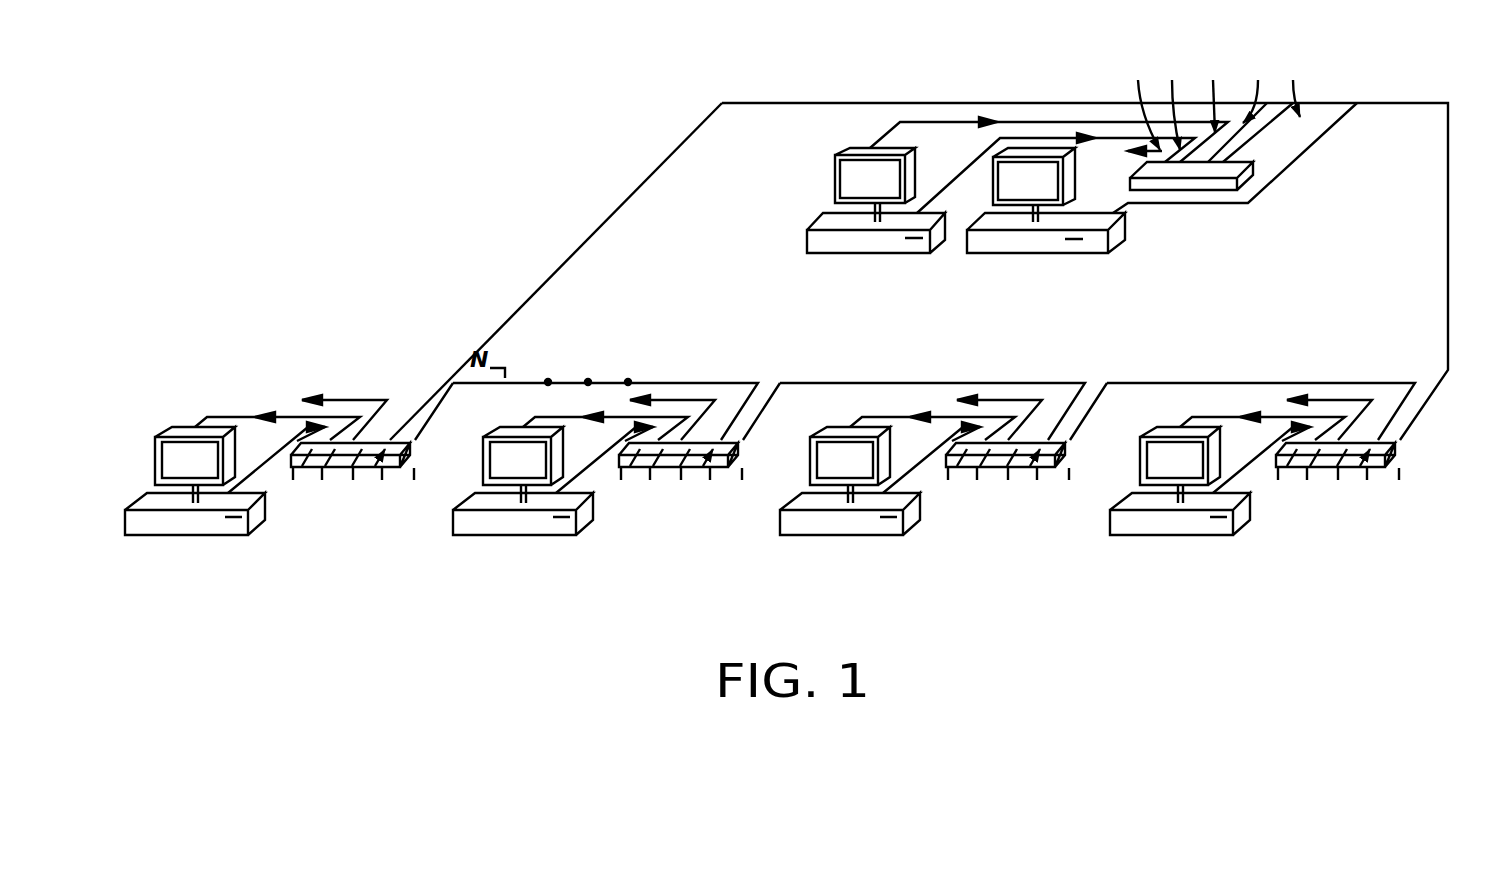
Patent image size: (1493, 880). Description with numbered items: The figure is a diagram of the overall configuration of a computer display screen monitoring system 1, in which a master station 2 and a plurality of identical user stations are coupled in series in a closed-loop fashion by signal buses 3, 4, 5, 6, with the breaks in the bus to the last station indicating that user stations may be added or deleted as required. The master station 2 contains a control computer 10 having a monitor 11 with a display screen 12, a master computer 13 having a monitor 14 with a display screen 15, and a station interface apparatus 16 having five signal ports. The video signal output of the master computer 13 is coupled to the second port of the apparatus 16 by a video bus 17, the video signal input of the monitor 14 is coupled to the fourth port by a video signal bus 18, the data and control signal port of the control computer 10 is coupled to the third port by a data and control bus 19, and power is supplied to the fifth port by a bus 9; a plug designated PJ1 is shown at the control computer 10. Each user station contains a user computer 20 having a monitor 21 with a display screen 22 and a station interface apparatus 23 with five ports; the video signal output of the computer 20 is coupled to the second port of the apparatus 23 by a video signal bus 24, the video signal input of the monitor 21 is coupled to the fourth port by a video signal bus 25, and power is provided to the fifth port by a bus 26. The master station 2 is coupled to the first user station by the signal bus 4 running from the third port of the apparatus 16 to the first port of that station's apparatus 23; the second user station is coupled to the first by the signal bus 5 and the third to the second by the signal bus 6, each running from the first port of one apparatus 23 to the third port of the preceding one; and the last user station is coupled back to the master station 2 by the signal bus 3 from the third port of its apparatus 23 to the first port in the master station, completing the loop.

The computer display screen monitoring system 1 is at (432, 180).
The master station 2 is at (1250, 235).
The signal bus 3 is at (672, 152).
The signal bus 4 is at (1390, 103).
The signal bus 5 is at (1323, 380).
The signal bus 6 is at (990, 382).
The bus 9 is at (1133, 163).
The control computer 10 is at (1117, 248).
The monitor 11 is at (1061, 146).
The display screen 12 is at (1033, 180).
The master computer 13 is at (807, 247).
The monitor 14 is at (835, 187).
The display screen 15 is at (862, 175).
The station interface apparatus 16 is at (1265, 161).
The video bus 17 is at (962, 168).
The video signal bus 18 is at (882, 140).
The data and control bus 19 is at (1277, 178).
The user computer 20 is at (150, 527).
The monitor 21 is at (153, 457).
The display screen 22 is at (165, 455).
The station interface apparatus 23 is at (405, 440).
The video signal bus 24 is at (257, 475).
The video signal bus 25 is at (219, 418).
The bus 26 is at (365, 402).
The plug jack of control PC PJ1 is at (1128, 210).